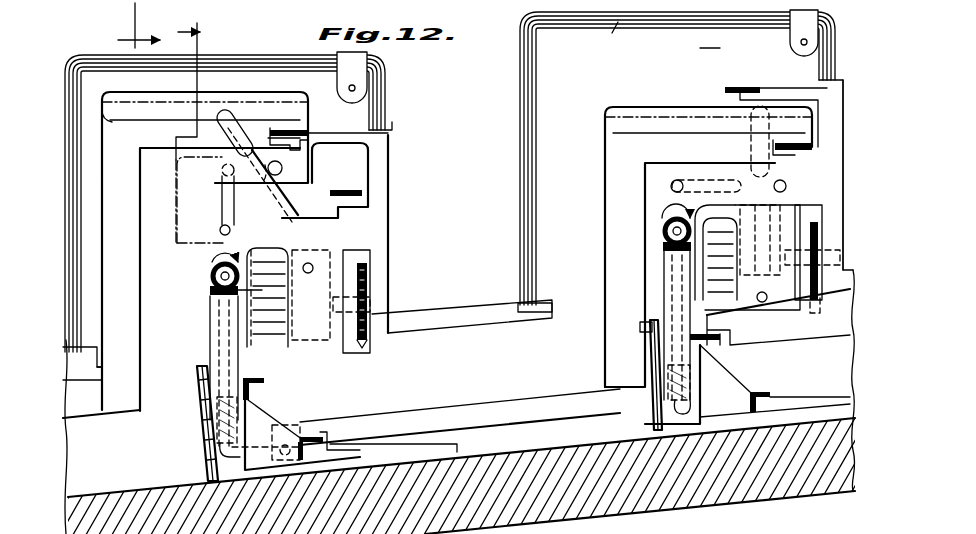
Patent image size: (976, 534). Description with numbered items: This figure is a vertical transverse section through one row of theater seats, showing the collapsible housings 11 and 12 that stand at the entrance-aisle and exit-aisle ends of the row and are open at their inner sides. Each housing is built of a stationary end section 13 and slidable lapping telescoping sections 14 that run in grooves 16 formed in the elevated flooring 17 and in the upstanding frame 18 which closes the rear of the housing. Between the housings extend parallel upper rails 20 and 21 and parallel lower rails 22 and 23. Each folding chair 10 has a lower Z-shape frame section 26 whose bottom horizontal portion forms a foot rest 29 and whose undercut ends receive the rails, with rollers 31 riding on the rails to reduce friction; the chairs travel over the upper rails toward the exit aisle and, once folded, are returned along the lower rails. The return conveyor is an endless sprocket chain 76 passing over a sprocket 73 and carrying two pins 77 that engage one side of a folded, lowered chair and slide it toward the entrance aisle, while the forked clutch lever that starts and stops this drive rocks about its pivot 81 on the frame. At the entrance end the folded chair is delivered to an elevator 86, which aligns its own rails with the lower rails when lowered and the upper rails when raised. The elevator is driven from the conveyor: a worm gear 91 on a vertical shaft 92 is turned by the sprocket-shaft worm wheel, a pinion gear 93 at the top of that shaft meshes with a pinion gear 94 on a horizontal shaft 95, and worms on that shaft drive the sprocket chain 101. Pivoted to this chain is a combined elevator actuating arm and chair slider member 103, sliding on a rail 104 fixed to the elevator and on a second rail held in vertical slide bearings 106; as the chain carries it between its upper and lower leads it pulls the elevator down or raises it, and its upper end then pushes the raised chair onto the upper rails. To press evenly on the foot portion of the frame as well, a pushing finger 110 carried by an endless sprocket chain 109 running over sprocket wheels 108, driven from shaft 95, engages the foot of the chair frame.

The folding chair 10 is at (664, 106).
The collapsible housing 11 is at (295, 54).
The collapsible housing 12 is at (131, 25).
The stationary end section 13 is at (700, 41).
The telescoping sections 14 is at (397, 132).
The grooves 16 is at (392, 136).
The elevated flooring 17 is at (470, 310).
The upstanding frame 18 is at (400, 226).
The upper rail 20 is at (305, 134).
The upper rail 21 is at (266, 380).
The lower rail 22 is at (356, 196).
The lower rail 23 is at (328, 442).
The Z-shape frame section 26 is at (141, 294).
The foot rest 29 is at (455, 405).
The rollers 31 is at (275, 128).
The sprocket 73 is at (200, 402).
The endless sprocket chain 76 is at (655, 428).
The pins 77 is at (640, 326).
The pivot 81 is at (233, 222).
The elevator 86 is at (194, 176).
The worm gear 91 is at (198, 416).
The vertical shaft 92 is at (210, 348).
The pinion gear 93 is at (210, 296).
The pinion gear 94 is at (210, 264).
The horizontal shaft 95 is at (212, 278).
The sprocket chain 101 is at (268, 340).
The combined elevator actuating arm and chair slider member 103 is at (282, 216).
The rail 104 is at (283, 176).
The vertical slide bearings 106 is at (322, 252).
The sprocket wheels 108 is at (362, 346).
The endless sprocket chain 109 is at (372, 286).
The pushing finger 110 is at (375, 256).